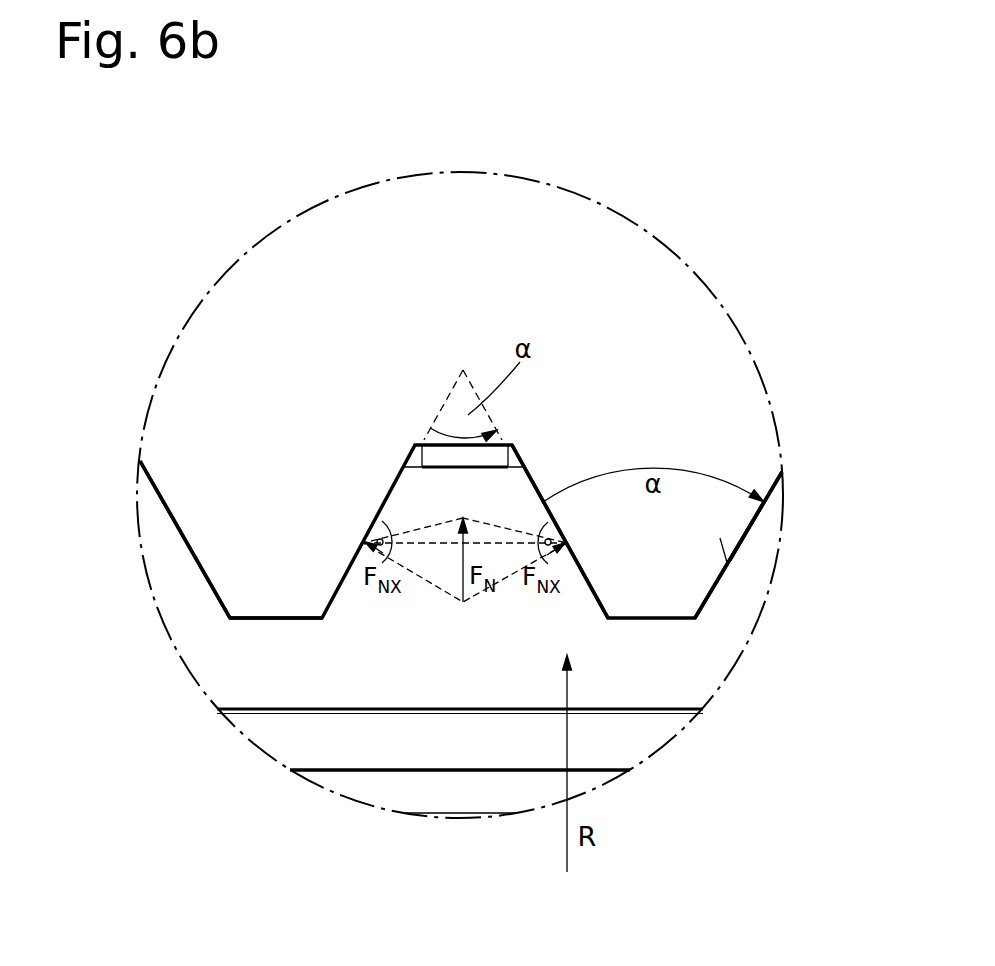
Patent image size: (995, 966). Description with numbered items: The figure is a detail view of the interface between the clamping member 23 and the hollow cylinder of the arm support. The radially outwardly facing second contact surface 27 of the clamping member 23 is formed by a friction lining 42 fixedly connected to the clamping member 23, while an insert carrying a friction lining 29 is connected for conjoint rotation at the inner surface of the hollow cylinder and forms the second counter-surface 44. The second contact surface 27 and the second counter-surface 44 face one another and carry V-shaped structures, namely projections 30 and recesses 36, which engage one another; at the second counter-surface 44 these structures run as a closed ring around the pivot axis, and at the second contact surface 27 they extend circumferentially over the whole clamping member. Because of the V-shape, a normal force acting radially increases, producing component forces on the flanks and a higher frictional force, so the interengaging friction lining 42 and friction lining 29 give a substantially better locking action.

The clamping member 23 is at (417, 787).
The second contact surface 27 is at (730, 565).
The friction lining 29 is at (602, 283).
The projections 30 is at (247, 437).
The recesses 36 is at (673, 443).
The friction lining 42 is at (227, 657).
The second counter-surface 44 is at (745, 540).